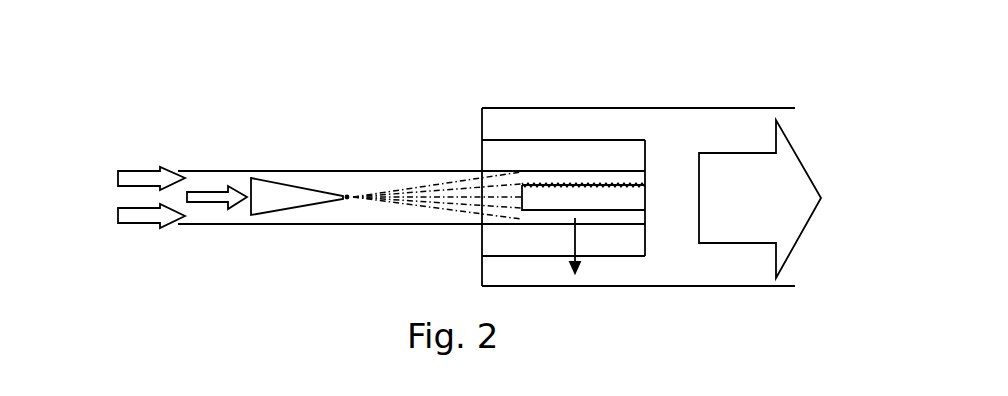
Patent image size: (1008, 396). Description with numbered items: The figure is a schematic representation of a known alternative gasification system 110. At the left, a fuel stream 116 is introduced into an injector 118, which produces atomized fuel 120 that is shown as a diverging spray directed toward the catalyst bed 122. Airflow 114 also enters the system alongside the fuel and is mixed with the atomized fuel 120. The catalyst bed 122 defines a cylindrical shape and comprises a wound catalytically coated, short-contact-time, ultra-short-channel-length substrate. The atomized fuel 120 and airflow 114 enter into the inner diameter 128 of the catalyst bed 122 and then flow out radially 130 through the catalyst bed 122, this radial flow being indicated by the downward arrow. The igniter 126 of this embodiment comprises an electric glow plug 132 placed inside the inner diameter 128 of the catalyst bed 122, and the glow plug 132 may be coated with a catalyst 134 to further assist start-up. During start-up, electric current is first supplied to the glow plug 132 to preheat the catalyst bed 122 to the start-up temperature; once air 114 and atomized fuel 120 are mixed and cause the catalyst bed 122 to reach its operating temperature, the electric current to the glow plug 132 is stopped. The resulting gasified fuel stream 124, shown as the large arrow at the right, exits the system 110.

The gasification system 110 is at (530, 68).
The airflow 114 is at (125, 181).
The fuel stream 116 is at (236, 137).
The injector 118 is at (318, 143).
The atomized fuel 120 is at (392, 200).
The catalyst bed 122 is at (583, 158).
The gasified fuel stream 124 is at (787, 180).
The igniter 126 is at (571, 197).
The inner diameter 128 is at (503, 219).
The radial outflow 130 is at (597, 253).
The electric glow plug 132 is at (620, 197).
The catalyst 134 is at (641, 186).